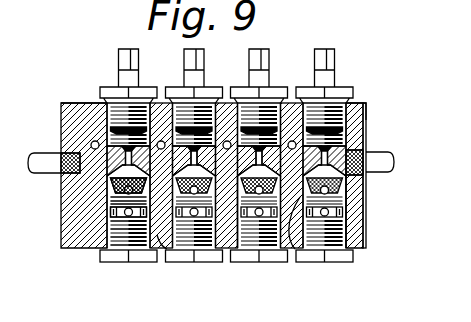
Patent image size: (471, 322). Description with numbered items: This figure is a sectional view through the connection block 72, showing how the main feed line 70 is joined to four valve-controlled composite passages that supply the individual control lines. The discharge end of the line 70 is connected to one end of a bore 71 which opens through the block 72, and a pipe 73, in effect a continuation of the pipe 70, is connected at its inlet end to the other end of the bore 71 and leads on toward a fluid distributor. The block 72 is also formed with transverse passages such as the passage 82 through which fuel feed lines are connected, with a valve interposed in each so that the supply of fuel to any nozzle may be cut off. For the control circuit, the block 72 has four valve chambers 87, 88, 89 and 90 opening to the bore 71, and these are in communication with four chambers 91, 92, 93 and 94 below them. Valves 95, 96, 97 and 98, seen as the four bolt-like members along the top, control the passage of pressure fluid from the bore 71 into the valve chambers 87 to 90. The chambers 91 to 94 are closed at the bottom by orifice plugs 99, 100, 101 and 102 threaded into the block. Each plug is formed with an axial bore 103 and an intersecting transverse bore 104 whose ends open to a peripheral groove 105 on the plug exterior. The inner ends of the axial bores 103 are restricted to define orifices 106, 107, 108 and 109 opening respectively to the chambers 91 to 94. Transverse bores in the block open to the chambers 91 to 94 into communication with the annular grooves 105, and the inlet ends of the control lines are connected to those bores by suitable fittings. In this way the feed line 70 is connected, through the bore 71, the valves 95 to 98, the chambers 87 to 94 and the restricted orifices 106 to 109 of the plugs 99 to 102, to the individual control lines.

The line 70 is at (42, 153).
The bore 71 is at (372, 137).
The connection block 72 is at (354, 131).
The pipe 73 is at (392, 151).
The transverse passage 82 is at (92, 141).
The valve chamber 87 is at (367, 106).
The valve chamber 88 is at (291, 103).
The valve chamber 89 is at (161, 103).
The valve chamber 90 is at (103, 110).
The chamber 91 is at (353, 200).
The chamber 92 is at (238, 250).
The chamber 93 is at (163, 249).
The chamber 94 is at (90, 248).
The valve 95 is at (335, 58).
The valve 96 is at (269, 60).
The valve 97 is at (204, 61).
The valve 98 is at (139, 61).
The orifice plug 99 is at (340, 262).
The orifice plug 100 is at (279, 263).
The orifice plug 101 is at (196, 262).
The orifice plug 102 is at (122, 263).
The axial bore 103 is at (108, 204).
The transverse bore 104 is at (108, 226).
The peripheral groove 105 is at (108, 211).
The orifice 106 is at (348, 178).
The orifice 107 is at (295, 250).
The orifice 108 is at (229, 249).
The orifice 109 is at (108, 198).